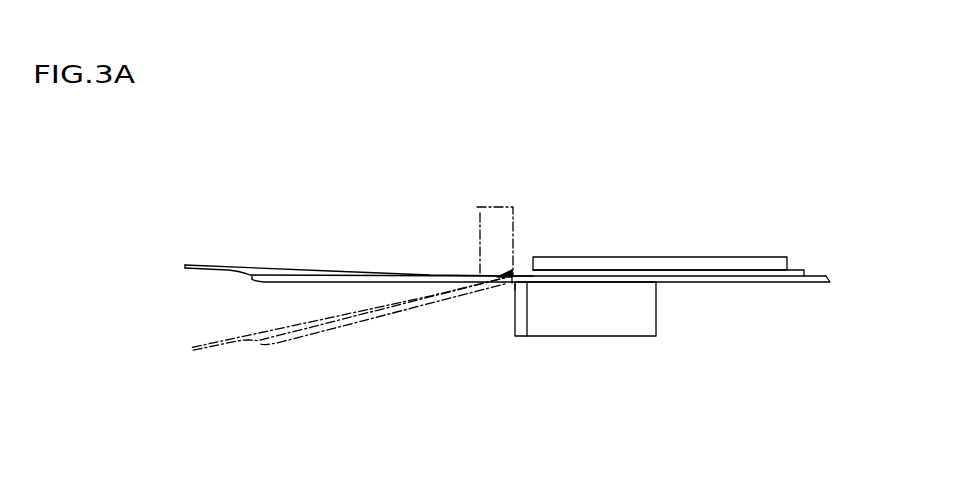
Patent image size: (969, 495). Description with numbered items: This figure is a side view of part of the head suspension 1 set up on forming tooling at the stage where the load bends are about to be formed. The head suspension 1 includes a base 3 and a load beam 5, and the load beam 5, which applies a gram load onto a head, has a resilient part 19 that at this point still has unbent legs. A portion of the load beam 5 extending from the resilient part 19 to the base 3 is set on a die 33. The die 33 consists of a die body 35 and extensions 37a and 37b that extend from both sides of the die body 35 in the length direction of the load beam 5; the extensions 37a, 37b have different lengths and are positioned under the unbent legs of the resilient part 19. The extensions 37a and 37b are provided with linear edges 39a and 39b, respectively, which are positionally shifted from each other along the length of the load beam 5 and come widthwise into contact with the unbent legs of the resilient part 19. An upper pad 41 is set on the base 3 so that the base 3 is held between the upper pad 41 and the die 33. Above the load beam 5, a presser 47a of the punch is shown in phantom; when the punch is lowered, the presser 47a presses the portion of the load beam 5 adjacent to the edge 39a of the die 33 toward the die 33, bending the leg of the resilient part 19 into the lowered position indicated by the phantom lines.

The head suspension 1 is at (340, 263).
The load beam 5 is at (408, 273).
The presser 47a is at (480, 222).
The resilient part 19 is at (513, 277).
The linear edge 39a is at (521, 277).
The upper pad 41 is at (778, 257).
The base 3 is at (808, 274).
The die 33 is at (658, 327).
The extension 37b is at (523, 337).
The linear edge 39b is at (511, 283).
The extension 37a is at (553, 318).
The die body 35 is at (632, 320).